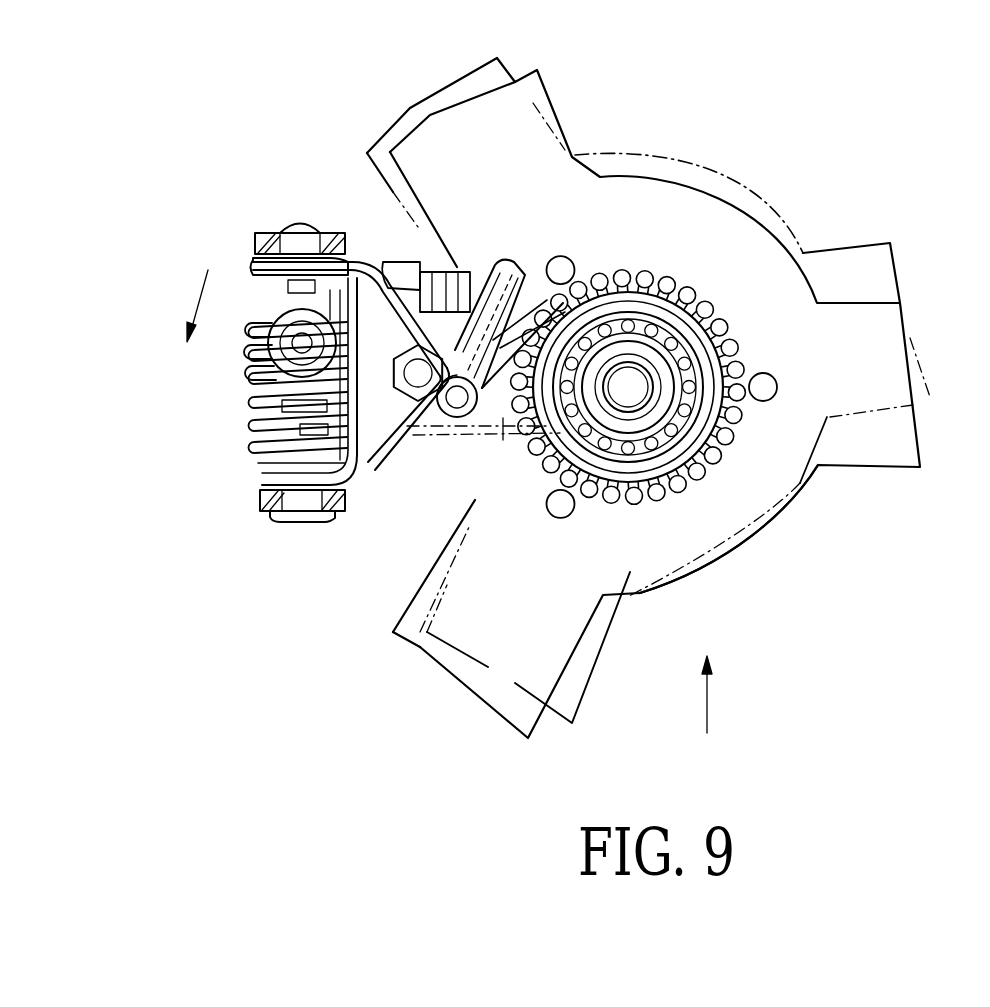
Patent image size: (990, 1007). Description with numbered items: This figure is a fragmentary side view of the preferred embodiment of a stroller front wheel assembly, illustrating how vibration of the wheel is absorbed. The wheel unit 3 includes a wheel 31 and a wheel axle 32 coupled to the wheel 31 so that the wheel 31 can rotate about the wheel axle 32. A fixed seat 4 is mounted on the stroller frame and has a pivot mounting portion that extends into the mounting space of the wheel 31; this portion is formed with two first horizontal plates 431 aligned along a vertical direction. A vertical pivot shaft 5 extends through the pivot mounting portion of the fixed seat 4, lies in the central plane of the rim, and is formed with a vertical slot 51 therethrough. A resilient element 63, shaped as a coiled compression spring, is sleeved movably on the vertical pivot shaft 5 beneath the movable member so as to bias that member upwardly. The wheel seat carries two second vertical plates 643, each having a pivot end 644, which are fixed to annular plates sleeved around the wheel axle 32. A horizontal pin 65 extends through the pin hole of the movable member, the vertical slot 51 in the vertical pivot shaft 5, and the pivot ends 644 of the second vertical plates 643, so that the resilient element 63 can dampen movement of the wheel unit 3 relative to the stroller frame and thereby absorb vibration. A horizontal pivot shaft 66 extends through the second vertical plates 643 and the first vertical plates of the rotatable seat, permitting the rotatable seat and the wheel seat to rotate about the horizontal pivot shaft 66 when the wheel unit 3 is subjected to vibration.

The wheel unit 3 is at (810, 184).
The wheel 31 is at (740, 567).
The wheel axle 32 is at (637, 380).
The fixed seat 4 is at (337, 228).
The first horizontal plates 431 is at (258, 235).
The vertical pivot shaft 5 is at (307, 520).
The vertical slot 51 is at (247, 440).
The resilient element 63 is at (243, 403).
The horizontal pin 65 is at (273, 317).
The horizontal pivot shaft 66 is at (405, 400).
The second vertical plates 643 is at (505, 440).
The pivot end 644 is at (375, 470).